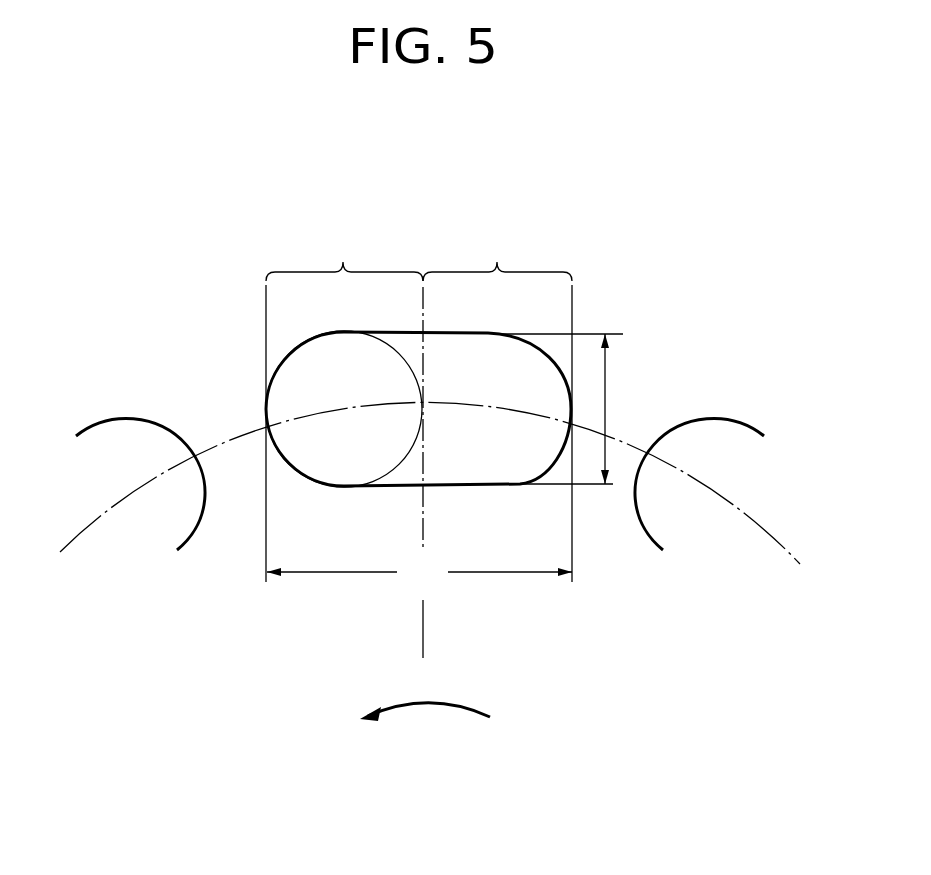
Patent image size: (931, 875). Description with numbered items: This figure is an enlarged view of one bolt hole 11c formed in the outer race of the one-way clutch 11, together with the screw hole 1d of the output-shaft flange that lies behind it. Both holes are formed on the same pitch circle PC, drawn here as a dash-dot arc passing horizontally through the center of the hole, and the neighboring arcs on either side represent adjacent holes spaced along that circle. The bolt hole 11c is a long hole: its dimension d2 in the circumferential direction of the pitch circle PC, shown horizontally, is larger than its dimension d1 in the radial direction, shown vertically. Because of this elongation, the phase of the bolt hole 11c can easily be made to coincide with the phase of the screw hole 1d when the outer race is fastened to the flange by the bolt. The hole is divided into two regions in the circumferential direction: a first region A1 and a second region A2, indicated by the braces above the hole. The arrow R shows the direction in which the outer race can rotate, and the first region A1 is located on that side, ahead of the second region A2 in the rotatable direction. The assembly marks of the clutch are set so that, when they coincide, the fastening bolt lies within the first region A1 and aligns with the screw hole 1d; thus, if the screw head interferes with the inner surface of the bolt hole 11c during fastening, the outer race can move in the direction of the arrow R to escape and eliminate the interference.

The one-way clutch 11 is at (318, 678).
The bolt hole 11c is at (519, 389).
The screw hole 1d is at (300, 402).
The pitch circle PC is at (82, 531).
The first region A1 is at (344, 255).
The second region A2 is at (497, 255).
The dimension in radial direction d1 is at (558, 409).
The dimension in circumferential direction d2 is at (419, 570).
The arrow indicating rotatable direction R is at (425, 695).